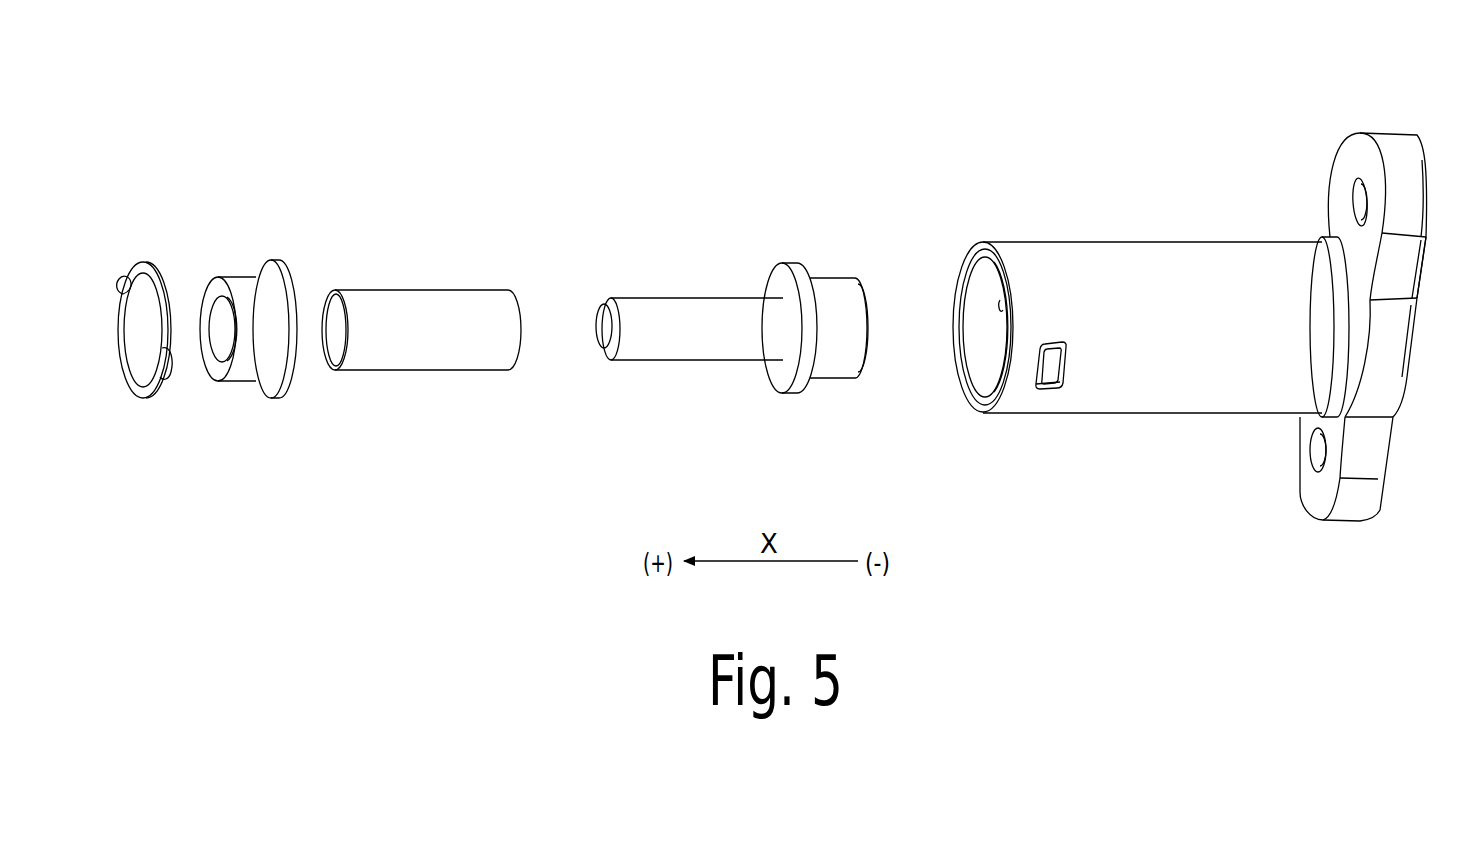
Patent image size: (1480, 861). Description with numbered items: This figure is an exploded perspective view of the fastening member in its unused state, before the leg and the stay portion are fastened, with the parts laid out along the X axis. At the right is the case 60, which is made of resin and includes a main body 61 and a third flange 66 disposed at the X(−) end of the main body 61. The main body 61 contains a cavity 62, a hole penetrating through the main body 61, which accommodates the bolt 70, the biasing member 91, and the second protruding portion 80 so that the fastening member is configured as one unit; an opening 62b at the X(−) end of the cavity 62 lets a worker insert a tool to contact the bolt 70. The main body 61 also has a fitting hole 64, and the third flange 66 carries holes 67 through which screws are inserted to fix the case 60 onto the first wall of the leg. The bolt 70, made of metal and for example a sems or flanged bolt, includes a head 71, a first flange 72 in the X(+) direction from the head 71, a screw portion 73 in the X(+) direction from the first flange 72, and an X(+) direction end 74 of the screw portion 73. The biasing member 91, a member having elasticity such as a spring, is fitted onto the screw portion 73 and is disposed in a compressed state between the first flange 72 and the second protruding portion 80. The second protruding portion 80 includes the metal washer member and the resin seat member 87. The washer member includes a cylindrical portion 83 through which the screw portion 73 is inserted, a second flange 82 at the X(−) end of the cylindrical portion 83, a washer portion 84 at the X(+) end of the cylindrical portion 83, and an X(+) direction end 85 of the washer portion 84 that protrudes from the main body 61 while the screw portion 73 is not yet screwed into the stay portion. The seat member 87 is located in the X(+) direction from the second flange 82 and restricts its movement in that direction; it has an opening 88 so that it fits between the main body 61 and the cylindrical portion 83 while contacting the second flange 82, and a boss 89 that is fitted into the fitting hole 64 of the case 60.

The case 60 is at (1177, 119).
The main body 61 is at (1172, 252).
The cavity 62 is at (981, 343).
The opening 62b is at (1420, 344).
The fitting hole 64 is at (1050, 364).
The third flange 66 is at (1398, 143).
The hole 67 is at (1354, 198).
The bolt 70 is at (712, 177).
The head 71 is at (838, 282).
The first flange 72 is at (792, 264).
The screw portion 73 is at (705, 305).
The X(+) direction end 74 is at (602, 324).
The second protruding portion 80 is at (214, 146).
The second flange 82 is at (276, 261).
The cylindrical portion 83 is at (247, 277).
The washer portion 84 is at (222, 276).
The X(+) direction end 85 is at (207, 300).
The seat member 87 is at (135, 262).
The opening 88 is at (147, 342).
The boss 89 is at (118, 285).
The biasing member 91 is at (427, 300).